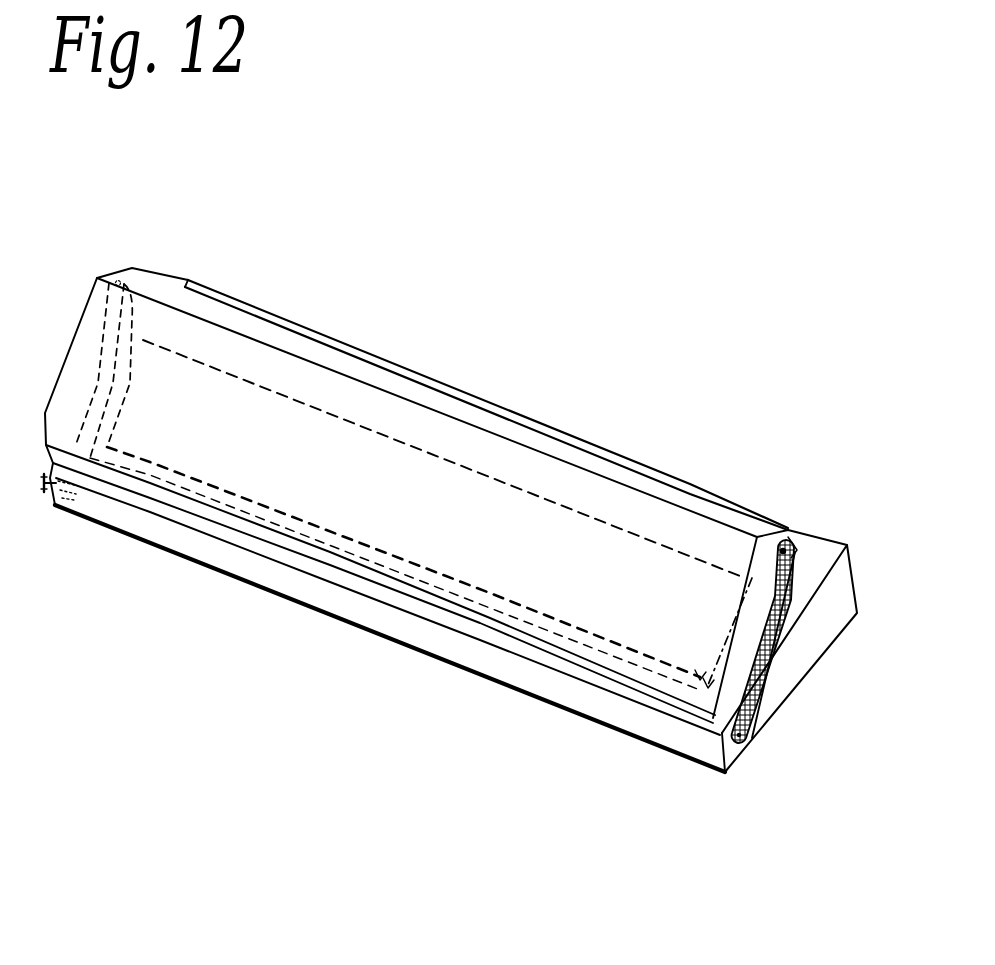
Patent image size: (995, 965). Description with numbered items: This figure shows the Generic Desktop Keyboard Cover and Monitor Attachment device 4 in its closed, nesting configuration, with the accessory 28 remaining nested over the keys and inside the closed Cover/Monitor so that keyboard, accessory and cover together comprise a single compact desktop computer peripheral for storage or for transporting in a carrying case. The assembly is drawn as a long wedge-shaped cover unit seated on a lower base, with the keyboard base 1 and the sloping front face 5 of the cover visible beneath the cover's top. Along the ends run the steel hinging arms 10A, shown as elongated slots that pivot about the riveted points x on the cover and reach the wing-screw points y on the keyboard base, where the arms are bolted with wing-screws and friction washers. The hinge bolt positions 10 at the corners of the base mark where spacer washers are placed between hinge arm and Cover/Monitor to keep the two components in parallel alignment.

The base block 1 is at (257, 588).
The Generic Desktop Keyboard Cover and Monitor Attachment device 4 is at (648, 470).
The front face of lid 5 is at (424, 538).
The hinge bolt positions 10 is at (53, 503).
The steel hinging arms 10A is at (115, 322).
The nesting accessory within keyboard and cover/monitor 28 is at (418, 367).
The riveted points on cover x is at (788, 537).
The wing-screw points on keyboard base y is at (55, 505).